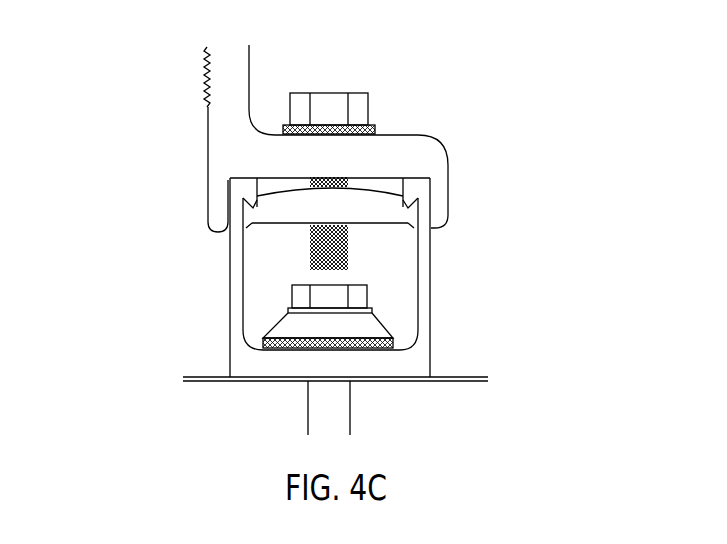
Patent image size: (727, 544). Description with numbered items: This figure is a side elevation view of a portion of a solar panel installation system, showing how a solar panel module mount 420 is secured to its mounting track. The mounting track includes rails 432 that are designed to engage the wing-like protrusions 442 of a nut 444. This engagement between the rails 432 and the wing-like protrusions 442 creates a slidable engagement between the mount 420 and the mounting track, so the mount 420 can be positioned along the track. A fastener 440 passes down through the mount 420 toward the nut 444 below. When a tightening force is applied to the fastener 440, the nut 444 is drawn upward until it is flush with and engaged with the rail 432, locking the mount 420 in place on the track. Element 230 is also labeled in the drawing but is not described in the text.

The housing / receptacle 230 is at (431, 322).
The solar panel module mount 420 is at (207, 156).
The rails 432 is at (243, 190).
The fastener 440 is at (335, 93).
The wing-like protrusions 442 is at (250, 218).
The nut 444 is at (296, 226).